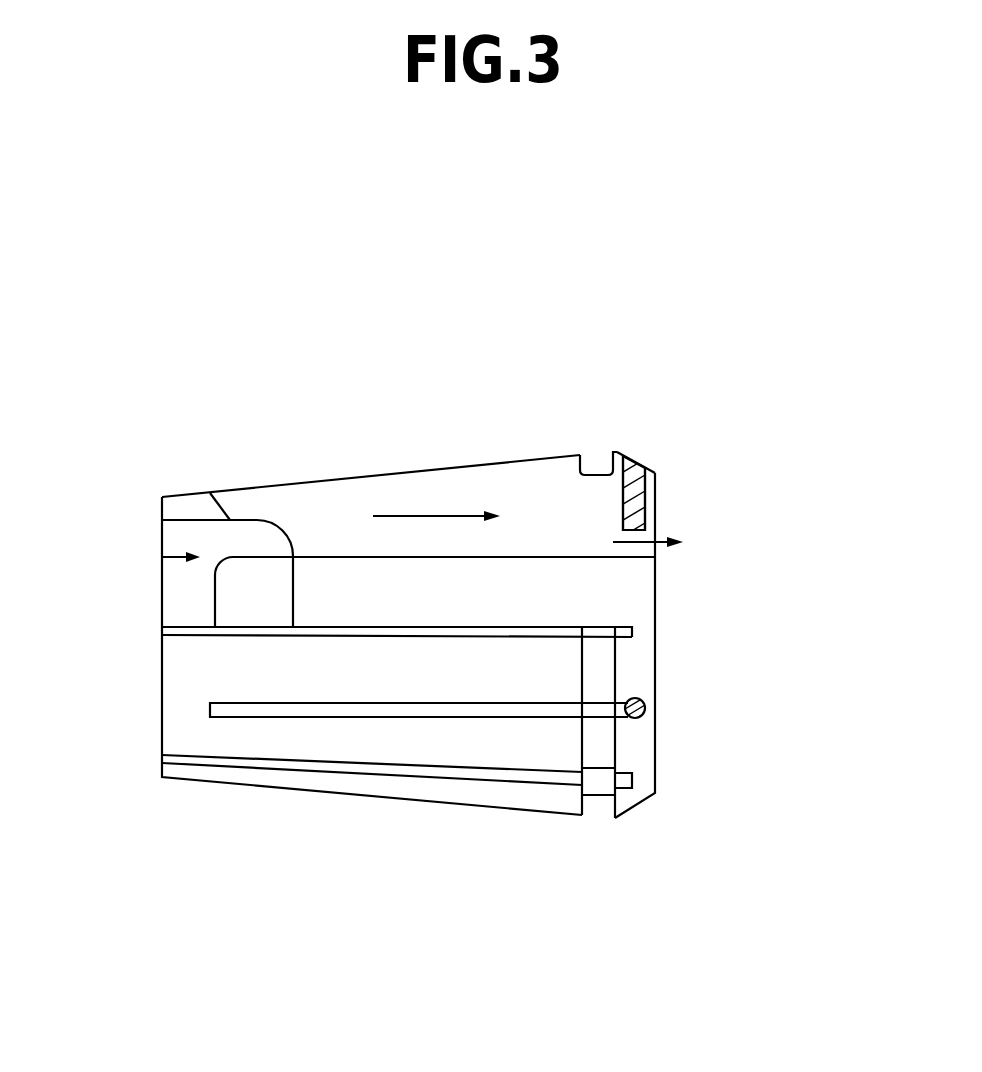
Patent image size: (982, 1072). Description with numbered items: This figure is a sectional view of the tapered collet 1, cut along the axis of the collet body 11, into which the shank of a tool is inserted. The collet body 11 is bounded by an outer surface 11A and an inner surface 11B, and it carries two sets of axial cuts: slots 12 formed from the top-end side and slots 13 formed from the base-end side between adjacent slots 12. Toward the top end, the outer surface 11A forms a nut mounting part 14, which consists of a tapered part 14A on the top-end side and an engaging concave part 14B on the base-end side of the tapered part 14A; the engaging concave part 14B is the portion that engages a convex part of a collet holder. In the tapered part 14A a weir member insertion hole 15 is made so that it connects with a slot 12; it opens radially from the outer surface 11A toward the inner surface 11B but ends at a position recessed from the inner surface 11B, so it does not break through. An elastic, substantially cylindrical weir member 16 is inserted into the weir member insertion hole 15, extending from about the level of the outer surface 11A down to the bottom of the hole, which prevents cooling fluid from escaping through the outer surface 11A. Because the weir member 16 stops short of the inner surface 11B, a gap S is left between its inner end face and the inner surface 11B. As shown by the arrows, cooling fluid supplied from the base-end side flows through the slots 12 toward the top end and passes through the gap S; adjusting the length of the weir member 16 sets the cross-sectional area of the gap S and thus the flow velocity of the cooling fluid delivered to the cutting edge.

The tapered collet 1 is at (724, 455).
The collet body 11 is at (183, 697).
The outer surface 11A is at (377, 472).
The inner surface 11B is at (593, 557).
The slots 12 is at (332, 523).
The slots 13 is at (173, 635).
The nut mounting part 14 is at (558, 292).
The tapered part 14A is at (637, 462).
The engaging concave part 14B is at (597, 477).
The weir member insertion hole 15 is at (622, 513).
The weir member 16 is at (640, 497).
The gap S is at (642, 549).